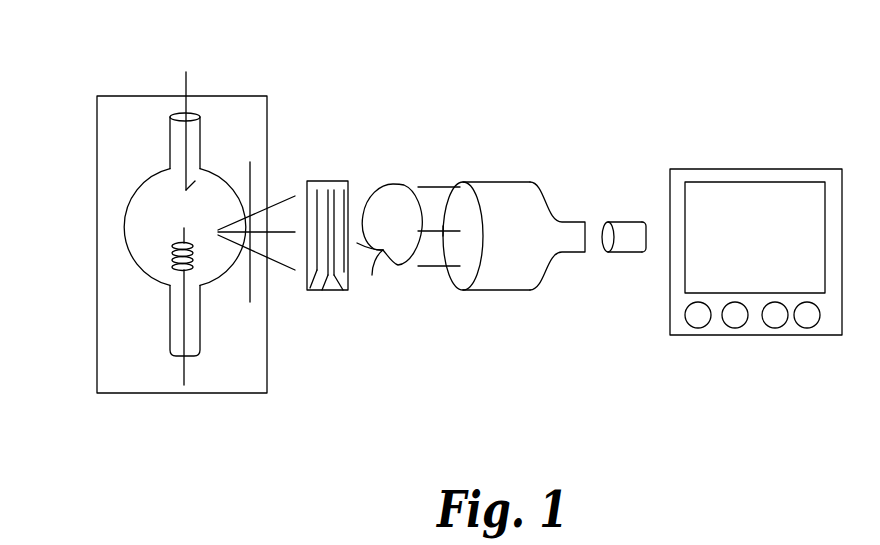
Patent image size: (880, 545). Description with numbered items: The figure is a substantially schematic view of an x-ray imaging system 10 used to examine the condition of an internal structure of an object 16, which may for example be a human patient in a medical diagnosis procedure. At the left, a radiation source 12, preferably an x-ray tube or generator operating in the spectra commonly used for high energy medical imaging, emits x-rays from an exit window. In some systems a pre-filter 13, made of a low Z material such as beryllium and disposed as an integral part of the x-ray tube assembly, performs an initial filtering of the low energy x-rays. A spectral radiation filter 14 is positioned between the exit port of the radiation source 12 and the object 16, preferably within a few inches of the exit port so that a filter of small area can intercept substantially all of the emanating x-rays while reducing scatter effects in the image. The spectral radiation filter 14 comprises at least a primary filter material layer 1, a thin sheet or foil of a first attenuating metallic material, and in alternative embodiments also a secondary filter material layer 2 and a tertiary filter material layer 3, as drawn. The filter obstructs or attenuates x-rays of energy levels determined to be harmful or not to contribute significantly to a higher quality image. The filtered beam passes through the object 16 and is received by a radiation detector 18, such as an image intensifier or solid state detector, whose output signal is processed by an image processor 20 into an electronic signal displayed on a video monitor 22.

The x-ray imaging system 10 is at (279, 137).
The radiation source 12 is at (100, 154).
The pre-filter 13 is at (250, 290).
The spectral radiation filter 14 is at (307, 183).
The primary filter material layer 1 is at (309, 290).
The secondary filter material layer 2 is at (345, 290).
The tertiary filter material layer 3 is at (349, 270).
The object 16 is at (405, 182).
The radiation detector 18 is at (540, 262).
The image processor 20 is at (628, 252).
The video monitor 22 is at (675, 189).